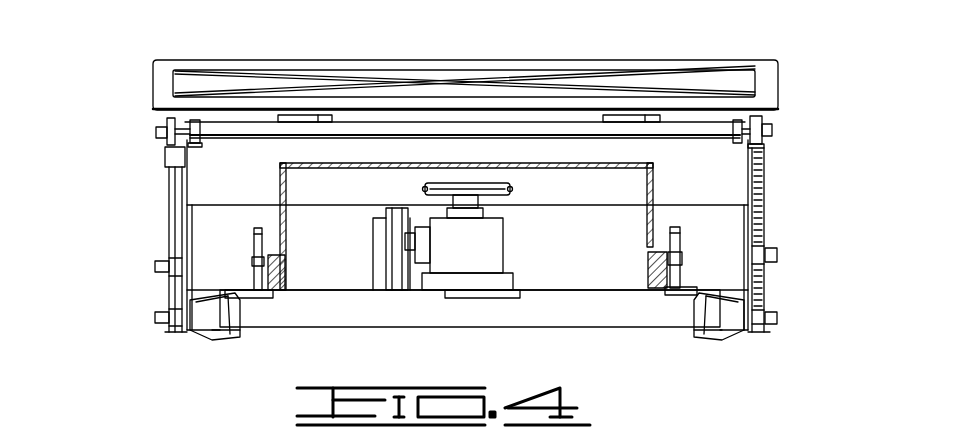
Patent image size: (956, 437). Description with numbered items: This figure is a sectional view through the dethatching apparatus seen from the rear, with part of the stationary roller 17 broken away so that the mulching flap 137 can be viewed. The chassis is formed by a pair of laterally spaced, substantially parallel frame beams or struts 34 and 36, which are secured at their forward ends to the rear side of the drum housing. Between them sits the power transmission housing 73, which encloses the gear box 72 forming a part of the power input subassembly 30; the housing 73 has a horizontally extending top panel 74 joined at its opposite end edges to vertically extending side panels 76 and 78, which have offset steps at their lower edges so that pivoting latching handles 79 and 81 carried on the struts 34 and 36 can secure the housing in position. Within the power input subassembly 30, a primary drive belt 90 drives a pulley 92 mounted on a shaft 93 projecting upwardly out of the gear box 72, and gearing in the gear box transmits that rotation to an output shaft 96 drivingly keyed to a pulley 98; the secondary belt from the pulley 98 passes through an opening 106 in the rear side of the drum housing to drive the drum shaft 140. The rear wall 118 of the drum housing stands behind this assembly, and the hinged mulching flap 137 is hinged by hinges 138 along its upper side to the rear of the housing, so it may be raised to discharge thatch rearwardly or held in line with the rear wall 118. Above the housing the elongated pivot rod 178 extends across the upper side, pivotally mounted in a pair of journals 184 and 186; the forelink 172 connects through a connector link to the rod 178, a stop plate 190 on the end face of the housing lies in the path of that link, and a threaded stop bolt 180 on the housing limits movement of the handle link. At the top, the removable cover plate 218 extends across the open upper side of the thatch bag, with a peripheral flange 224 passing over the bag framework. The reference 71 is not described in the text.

The roller 17 is at (205, 322).
The power input subassembly 30 is at (520, 224).
The frame beam 34 is at (652, 268).
The frame beam 36 is at (294, 274).
The bottom plate region 71 is at (418, 300).
The gear box 72 is at (487, 252).
The power transmission housing 73 is at (668, 170).
The top panel 74 is at (340, 163).
The side panel 76 is at (280, 172).
The side panel 78 is at (653, 204).
The latching handle 79 is at (253, 243).
The latching handle 81 is at (681, 241).
The primary drive belt 90 is at (510, 186).
The pulley 92 is at (462, 183).
The shaft 93 is at (468, 205).
The output shaft 96 is at (390, 243).
The pulley 98 is at (396, 210).
The opening 106 is at (388, 273).
The rear wall 118 is at (580, 266).
The mulching flap 137 is at (335, 310).
The hinges 138 is at (455, 300).
The shaft 140 is at (779, 257).
The forelink 172 is at (170, 183).
The pivot rod 178 is at (700, 124).
The threaded stop bolt 180 is at (766, 166).
The journal 184 is at (740, 119).
The journal 186 is at (197, 122).
The stop plate 190 is at (165, 157).
The cover plate 218 is at (750, 57).
The peripheral flange 224 is at (367, 112).